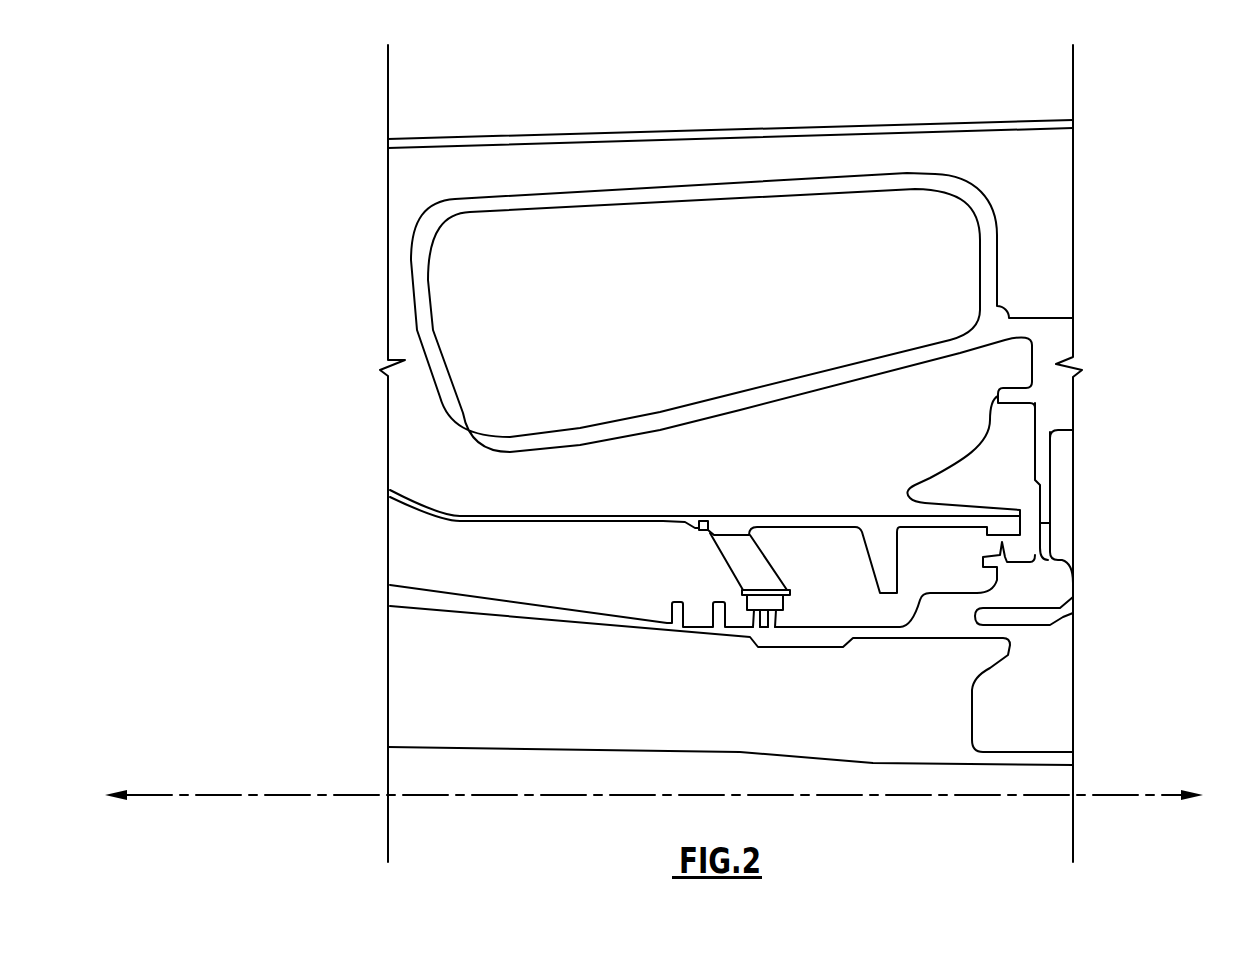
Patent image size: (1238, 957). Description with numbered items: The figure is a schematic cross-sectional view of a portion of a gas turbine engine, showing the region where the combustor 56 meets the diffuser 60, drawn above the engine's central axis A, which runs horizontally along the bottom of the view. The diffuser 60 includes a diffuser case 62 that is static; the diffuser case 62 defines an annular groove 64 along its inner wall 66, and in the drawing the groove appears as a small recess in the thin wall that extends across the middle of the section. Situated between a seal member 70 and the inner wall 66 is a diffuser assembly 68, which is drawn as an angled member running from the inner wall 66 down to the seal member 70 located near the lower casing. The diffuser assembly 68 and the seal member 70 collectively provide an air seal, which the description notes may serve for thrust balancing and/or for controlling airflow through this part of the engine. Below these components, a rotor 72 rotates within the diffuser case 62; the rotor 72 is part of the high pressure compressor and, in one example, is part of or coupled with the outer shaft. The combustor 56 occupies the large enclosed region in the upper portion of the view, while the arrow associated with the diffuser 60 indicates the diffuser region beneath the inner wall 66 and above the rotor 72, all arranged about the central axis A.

The combustor 56 is at (940, 282).
The diffuser 60 is at (703, 690).
The diffuser case 62 is at (634, 516).
The annular groove 64 is at (703, 521).
The inner wall 66 is at (663, 527).
The diffuser assembly 68 is at (747, 568).
The seal member 70 is at (781, 602).
The rotor 72 is at (678, 636).
The engine central longitudinal axis A is at (1118, 795).